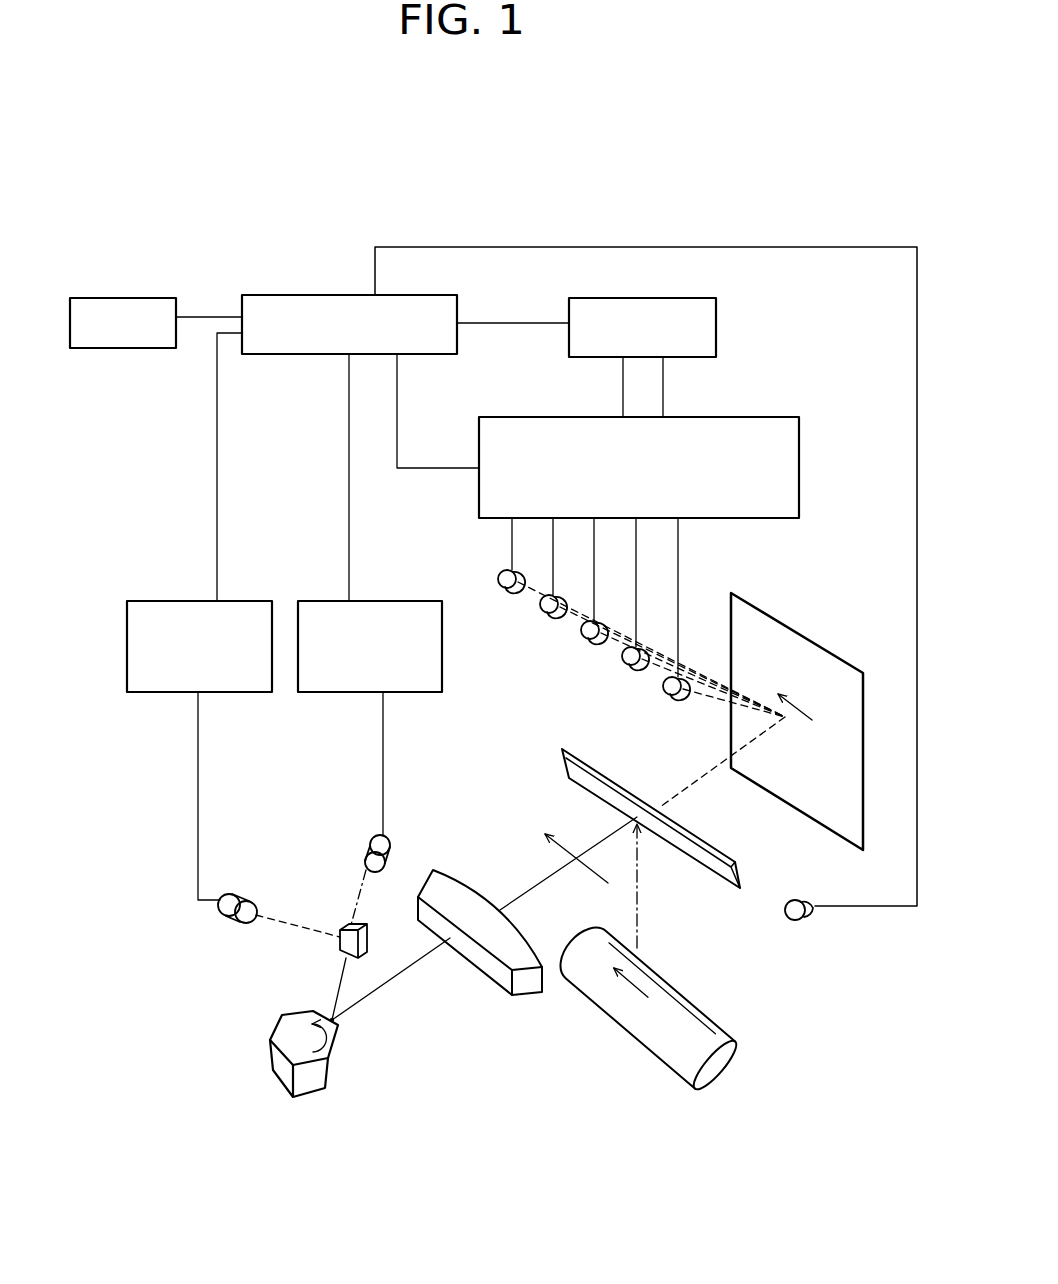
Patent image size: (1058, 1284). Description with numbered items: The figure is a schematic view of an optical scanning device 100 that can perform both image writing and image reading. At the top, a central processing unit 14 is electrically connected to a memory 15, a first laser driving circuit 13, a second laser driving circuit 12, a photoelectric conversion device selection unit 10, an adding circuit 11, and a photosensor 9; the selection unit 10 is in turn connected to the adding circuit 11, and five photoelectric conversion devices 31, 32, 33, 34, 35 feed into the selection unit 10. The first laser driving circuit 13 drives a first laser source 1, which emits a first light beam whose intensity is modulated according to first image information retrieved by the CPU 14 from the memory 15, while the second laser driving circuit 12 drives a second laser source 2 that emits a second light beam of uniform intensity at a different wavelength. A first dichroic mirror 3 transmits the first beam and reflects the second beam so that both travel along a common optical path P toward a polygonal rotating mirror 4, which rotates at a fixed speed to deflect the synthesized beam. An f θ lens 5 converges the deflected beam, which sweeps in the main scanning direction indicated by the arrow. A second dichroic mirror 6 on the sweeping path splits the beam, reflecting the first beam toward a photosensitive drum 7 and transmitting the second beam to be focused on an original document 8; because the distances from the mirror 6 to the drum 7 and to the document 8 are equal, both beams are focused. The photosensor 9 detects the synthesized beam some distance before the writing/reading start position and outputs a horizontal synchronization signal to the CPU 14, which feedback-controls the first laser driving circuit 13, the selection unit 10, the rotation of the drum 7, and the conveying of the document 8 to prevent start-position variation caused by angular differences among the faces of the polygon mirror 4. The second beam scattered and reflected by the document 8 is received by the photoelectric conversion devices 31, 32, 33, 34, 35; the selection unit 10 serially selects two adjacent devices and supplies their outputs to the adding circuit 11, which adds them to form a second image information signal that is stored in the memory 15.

The optical scanning device 100 is at (841, 212).
The first laser source 1 is at (390, 842).
The second laser source 2 is at (216, 913).
The first dichroic mirror 3 is at (342, 947).
The polygonal rotating mirror 4 is at (283, 1090).
The f θ lens 5 is at (508, 995).
The second dichroic mirror 6 is at (560, 753).
The photosensitive drum 7 is at (669, 1073).
The original document 8 is at (785, 626).
The photosensor 9 is at (805, 920).
The photoelectric conversion device selection unit 10 is at (799, 467).
The adding circuit 11 is at (716, 323).
The second laser driving circuit 12 is at (156, 601).
The first laser driving circuit 13 is at (393, 601).
The central processing unit 14 is at (308, 295).
The memory 15 is at (133, 297).
The photoelectric conversion device 31 is at (666, 696).
The photoelectric conversion device 32 is at (625, 666).
The photoelectric conversion device 33 is at (584, 640).
The photoelectric conversion device 34 is at (543, 614).
The photoelectric conversion device 35 is at (501, 589).
The optical path P is at (330, 1004).